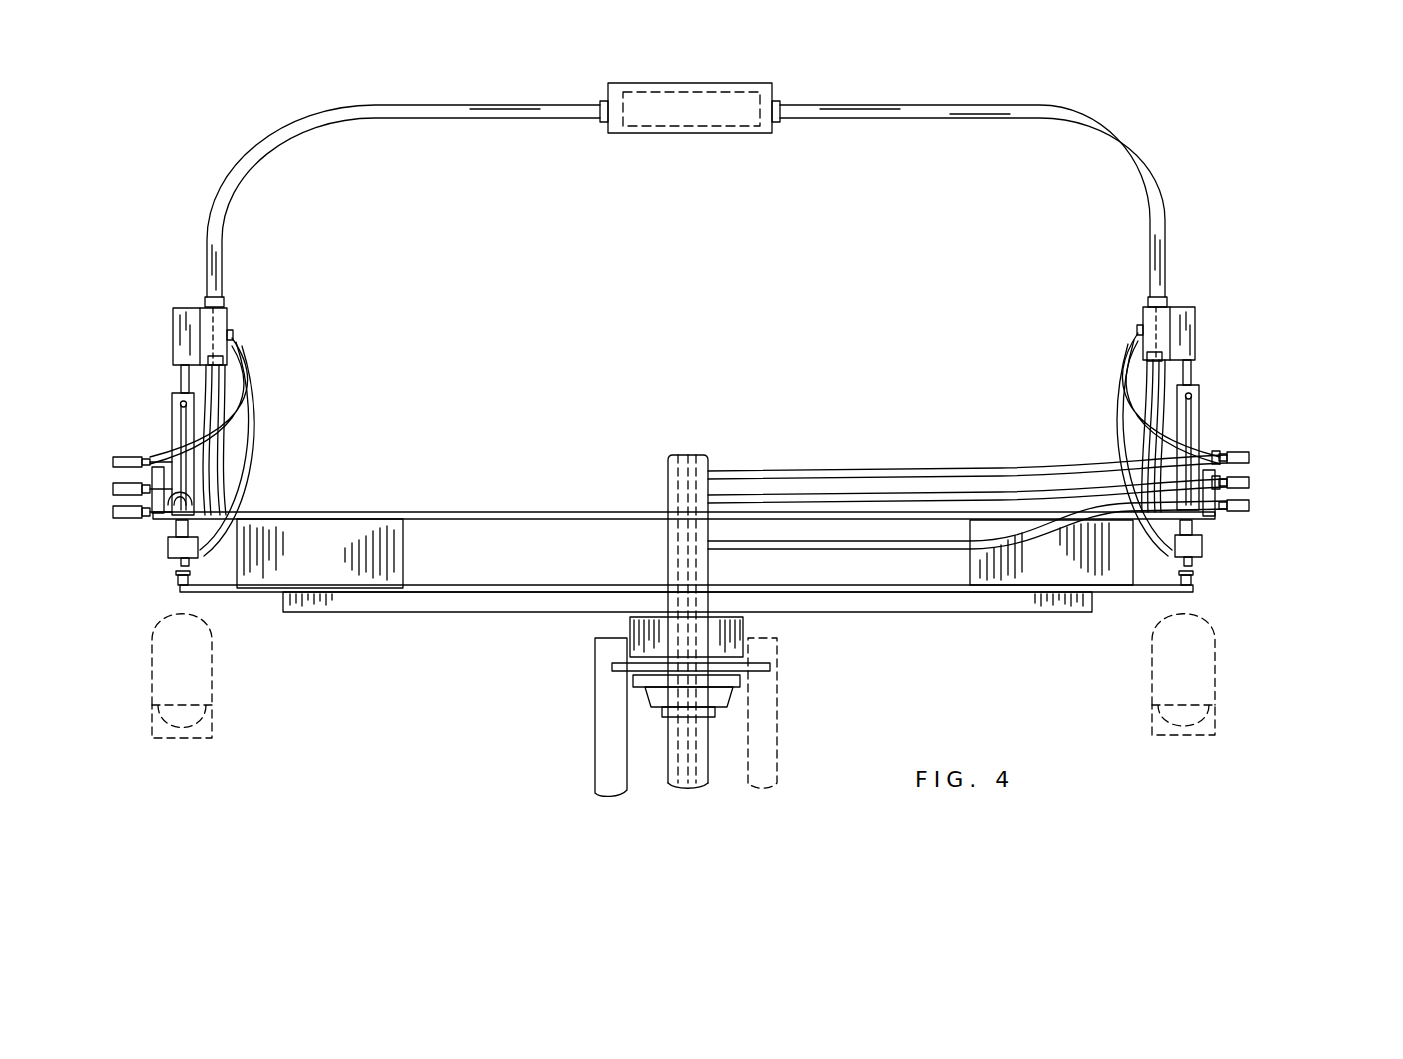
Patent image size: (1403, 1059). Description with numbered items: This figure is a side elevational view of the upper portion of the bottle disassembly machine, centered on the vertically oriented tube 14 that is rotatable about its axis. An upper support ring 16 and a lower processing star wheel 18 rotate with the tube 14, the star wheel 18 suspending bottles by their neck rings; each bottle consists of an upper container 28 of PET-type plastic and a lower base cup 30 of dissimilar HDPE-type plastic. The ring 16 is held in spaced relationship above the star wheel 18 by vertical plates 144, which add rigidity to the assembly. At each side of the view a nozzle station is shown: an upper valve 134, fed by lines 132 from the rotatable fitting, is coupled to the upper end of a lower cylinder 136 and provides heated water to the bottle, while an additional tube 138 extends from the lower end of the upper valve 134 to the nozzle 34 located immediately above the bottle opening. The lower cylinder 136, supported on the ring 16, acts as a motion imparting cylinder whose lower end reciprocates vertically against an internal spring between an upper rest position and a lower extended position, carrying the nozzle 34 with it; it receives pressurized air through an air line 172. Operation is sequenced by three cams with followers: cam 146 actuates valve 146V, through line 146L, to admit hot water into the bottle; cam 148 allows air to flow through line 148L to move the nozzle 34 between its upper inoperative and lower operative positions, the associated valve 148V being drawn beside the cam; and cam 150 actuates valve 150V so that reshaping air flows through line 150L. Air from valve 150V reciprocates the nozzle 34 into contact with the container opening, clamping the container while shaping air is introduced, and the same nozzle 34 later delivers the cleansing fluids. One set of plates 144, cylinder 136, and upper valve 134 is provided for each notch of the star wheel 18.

The tube 14 is at (668, 478).
The upper ring 16 is at (393, 512).
The processing star wheel 18 is at (851, 612).
The upper container 28 is at (212, 652).
The lower base cup 30 is at (212, 727).
The nozzle 34 is at (175, 570).
The lines 132 is at (498, 105).
The upper valve 134 is at (226, 310).
The lower cylinder 136 is at (173, 396).
The additional tube 138 is at (243, 400).
The vertical plates 144 is at (400, 565).
The cam 146 is at (115, 458).
The cam 148 is at (118, 487).
The cam 150 is at (118, 511).
The valve 146V is at (1222, 455).
The valve 148V is at (1222, 480).
The valve 150V is at (168, 545).
The line 146L is at (873, 470).
The line 148L is at (905, 494).
The line 150L is at (918, 541).
The air line 172 is at (205, 490).